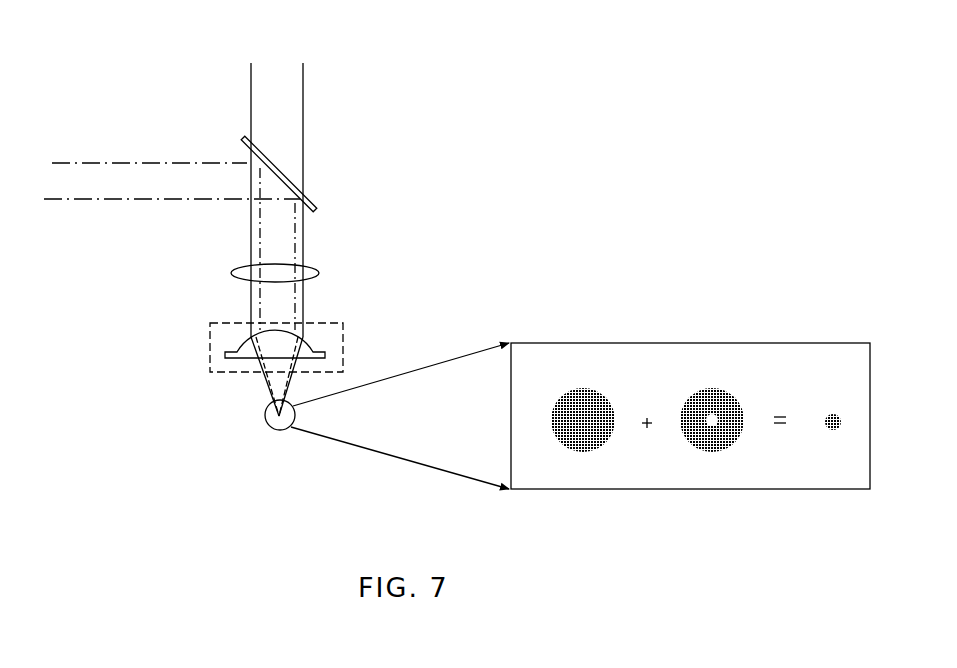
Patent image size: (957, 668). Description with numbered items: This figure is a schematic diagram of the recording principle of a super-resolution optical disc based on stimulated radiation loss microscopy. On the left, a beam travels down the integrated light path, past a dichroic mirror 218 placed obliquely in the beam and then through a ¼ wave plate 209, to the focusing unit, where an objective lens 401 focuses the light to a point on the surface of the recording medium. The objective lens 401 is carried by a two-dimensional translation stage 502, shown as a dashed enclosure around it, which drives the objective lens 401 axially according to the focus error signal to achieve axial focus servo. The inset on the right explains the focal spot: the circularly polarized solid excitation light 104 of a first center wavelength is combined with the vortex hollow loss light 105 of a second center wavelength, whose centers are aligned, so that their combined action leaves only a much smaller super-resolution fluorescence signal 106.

The dichroic mirror 218 is at (302, 174).
The ¼ wave plate 209 is at (299, 259).
The two-dimensional translation stage 502 is at (247, 337).
The objective lens 401 is at (313, 343).
The excitation light 104 is at (574, 403).
The loss light 105 is at (703, 403).
The fluorescence signal 106 is at (814, 405).